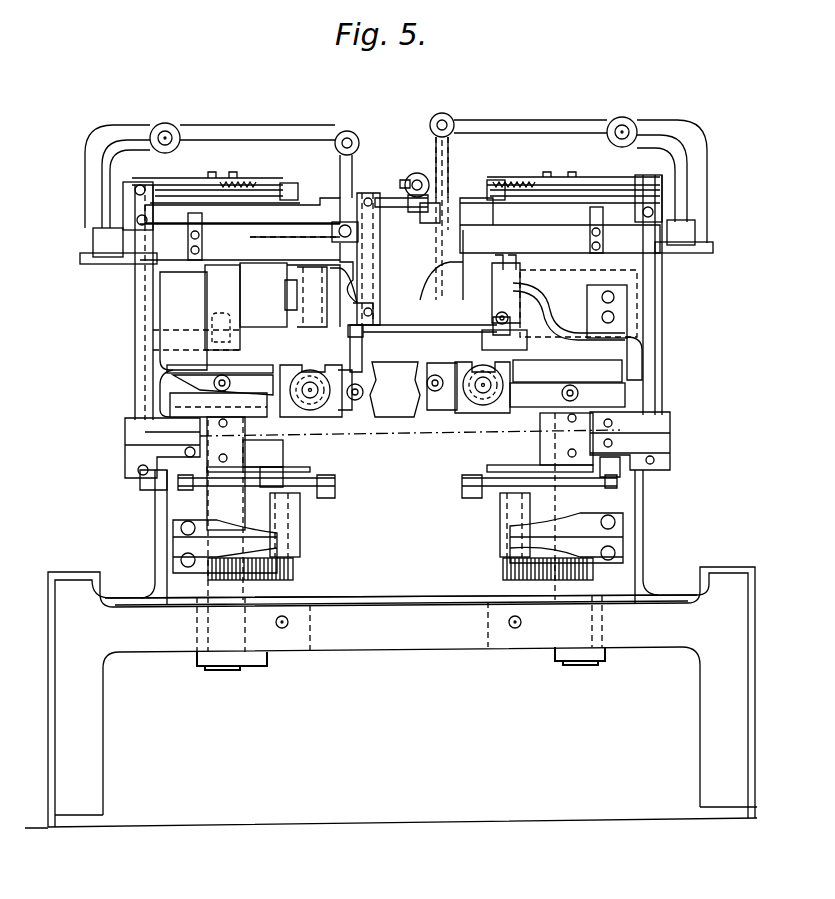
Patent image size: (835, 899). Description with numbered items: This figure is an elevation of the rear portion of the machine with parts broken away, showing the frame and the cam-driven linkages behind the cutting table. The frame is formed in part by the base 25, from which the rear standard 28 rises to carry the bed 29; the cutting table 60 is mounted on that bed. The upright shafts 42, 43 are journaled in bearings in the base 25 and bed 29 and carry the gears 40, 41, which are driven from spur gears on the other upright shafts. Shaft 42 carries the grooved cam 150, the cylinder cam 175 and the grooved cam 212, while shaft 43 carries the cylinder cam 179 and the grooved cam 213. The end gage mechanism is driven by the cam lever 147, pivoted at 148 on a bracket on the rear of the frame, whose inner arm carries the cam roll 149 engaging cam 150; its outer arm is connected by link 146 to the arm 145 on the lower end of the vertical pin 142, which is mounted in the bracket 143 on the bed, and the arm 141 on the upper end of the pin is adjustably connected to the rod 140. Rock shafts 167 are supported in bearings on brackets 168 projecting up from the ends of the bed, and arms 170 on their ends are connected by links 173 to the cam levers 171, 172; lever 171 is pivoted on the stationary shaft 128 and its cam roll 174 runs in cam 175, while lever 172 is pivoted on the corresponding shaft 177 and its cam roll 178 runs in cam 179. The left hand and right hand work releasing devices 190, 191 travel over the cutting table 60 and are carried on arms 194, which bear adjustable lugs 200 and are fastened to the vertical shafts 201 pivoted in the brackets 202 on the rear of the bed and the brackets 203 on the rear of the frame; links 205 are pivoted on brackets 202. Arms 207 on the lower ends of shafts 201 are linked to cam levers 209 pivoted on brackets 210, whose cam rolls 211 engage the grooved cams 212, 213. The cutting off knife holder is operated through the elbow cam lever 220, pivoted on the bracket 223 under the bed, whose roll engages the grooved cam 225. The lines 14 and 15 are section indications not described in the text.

The section line 14 is at (718, 426).
The section line 15 is at (690, 280).
The base 25 is at (401, 622).
The rear standard 28 is at (645, 498).
The bed 29 is at (317, 317).
The gear 40 is at (503, 576).
The gear 41 is at (293, 576).
The upright shaft 42 is at (566, 527).
The upright shaft 43 is at (218, 503).
The cutting table 60 is at (320, 190).
The stationary shaft 128 is at (483, 410).
The rod 140 is at (418, 172).
The arm 141 is at (375, 193).
The vertical pin 142 is at (373, 232).
The bracket 143 is at (360, 248).
The arm 145 is at (395, 389).
The link 146 is at (418, 332).
The cam lever 147 is at (492, 313).
The pivot 148 is at (490, 283).
The cam roll 149 is at (490, 334).
The grooved cam 150 is at (545, 323).
The rock shaft 167 is at (622, 118).
The bracket 168 is at (697, 155).
The arm 170 is at (530, 120).
The cam lever 171 is at (437, 392).
The cam lever 172 is at (353, 400).
The link 173 is at (450, 152).
The cam roll 174 is at (580, 393).
The cylinder cam 175 is at (610, 368).
The shaft 177 is at (310, 412).
The cam roll 178 is at (210, 386).
The cylinder cam 179 is at (165, 405).
The left hand work releasing device 190 is at (513, 186).
The right hand work releasing device 191 is at (298, 178).
The arm 194 is at (605, 183).
The lug 200 is at (540, 178).
The vertical shaft 201 is at (652, 313).
The bracket 202 is at (703, 232).
The bracket 203 is at (670, 440).
The link 205 is at (560, 205).
The arm 207 is at (615, 480).
The cam lever 209 is at (468, 490).
The bracket 210 is at (500, 548).
The cam roll 211 is at (512, 465).
The grooved cam 212 is at (487, 468).
The grooved cam 213 is at (310, 468).
The elbow cam lever 220 is at (257, 340).
The bracket 223 is at (267, 265).
The grooved cam 225 is at (197, 330).